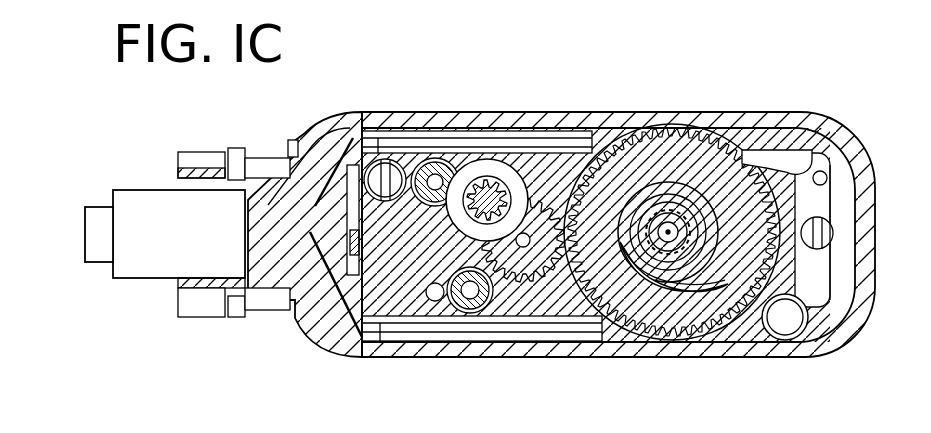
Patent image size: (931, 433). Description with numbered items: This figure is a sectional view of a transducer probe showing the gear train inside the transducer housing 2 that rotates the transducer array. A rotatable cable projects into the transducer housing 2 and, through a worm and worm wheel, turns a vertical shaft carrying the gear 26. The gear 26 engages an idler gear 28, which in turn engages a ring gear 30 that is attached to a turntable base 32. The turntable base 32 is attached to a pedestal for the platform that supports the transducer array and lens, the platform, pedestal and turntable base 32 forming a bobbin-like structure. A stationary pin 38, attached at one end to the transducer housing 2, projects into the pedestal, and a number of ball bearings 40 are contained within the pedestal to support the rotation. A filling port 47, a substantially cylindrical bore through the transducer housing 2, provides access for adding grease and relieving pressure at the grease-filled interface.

The transducer housing 2 is at (350, 112).
The gear 26 is at (487, 178).
The idler gear 28 is at (522, 257).
The ring gear 30 is at (663, 333).
The turntable base 32 is at (667, 181).
The stationary pin 38 is at (680, 207).
The ball bearings 40 is at (678, 262).
The filling port 47 is at (783, 315).